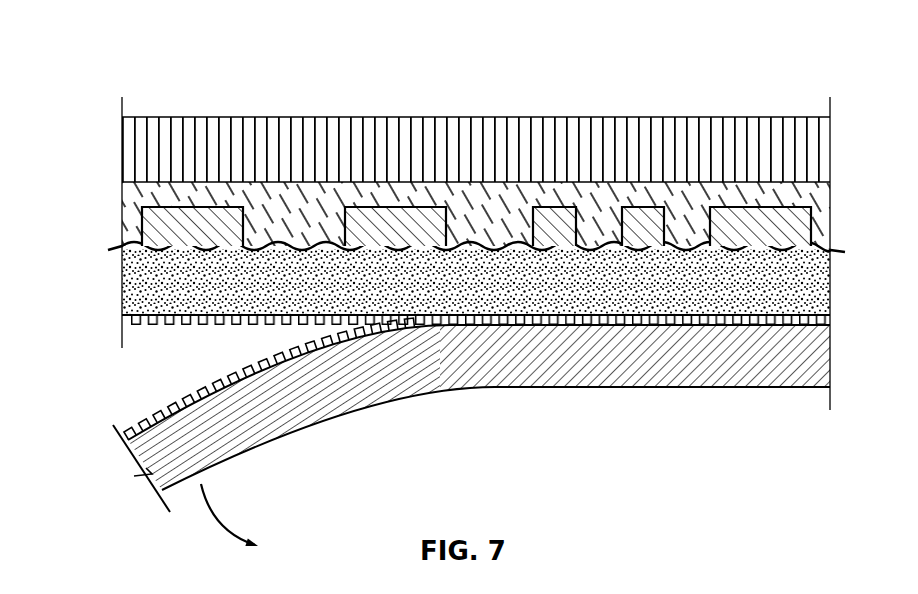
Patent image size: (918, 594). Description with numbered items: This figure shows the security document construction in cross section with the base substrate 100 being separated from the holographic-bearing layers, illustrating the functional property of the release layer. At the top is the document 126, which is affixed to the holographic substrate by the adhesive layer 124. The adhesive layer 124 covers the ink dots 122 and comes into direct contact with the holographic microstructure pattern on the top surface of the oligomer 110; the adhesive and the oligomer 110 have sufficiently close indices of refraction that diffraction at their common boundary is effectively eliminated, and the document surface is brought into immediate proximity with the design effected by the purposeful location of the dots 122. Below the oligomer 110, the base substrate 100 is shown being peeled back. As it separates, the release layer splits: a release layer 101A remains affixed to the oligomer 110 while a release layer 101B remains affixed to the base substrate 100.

The document 126 is at (171, 125).
The adhesive layer 124 is at (126, 188).
The ink dots 122 is at (140, 226).
The oligomer 110 is at (137, 287).
The release layer 101A is at (130, 325).
The release layer 101B is at (145, 420).
The base substrate 100 is at (263, 423).